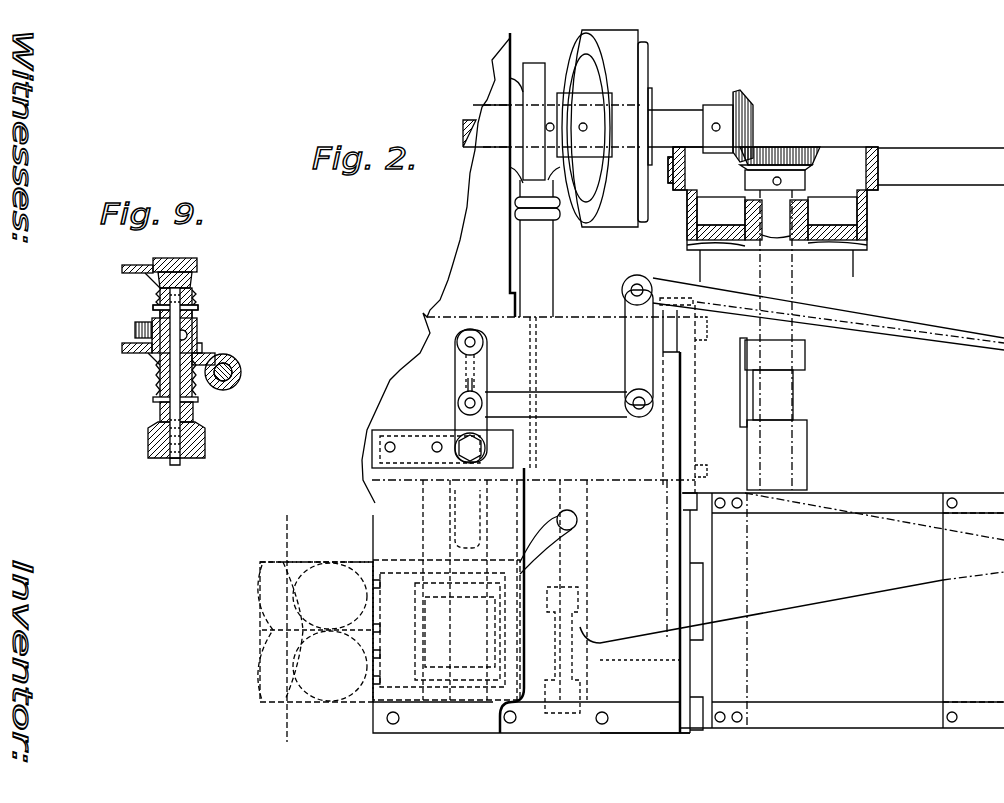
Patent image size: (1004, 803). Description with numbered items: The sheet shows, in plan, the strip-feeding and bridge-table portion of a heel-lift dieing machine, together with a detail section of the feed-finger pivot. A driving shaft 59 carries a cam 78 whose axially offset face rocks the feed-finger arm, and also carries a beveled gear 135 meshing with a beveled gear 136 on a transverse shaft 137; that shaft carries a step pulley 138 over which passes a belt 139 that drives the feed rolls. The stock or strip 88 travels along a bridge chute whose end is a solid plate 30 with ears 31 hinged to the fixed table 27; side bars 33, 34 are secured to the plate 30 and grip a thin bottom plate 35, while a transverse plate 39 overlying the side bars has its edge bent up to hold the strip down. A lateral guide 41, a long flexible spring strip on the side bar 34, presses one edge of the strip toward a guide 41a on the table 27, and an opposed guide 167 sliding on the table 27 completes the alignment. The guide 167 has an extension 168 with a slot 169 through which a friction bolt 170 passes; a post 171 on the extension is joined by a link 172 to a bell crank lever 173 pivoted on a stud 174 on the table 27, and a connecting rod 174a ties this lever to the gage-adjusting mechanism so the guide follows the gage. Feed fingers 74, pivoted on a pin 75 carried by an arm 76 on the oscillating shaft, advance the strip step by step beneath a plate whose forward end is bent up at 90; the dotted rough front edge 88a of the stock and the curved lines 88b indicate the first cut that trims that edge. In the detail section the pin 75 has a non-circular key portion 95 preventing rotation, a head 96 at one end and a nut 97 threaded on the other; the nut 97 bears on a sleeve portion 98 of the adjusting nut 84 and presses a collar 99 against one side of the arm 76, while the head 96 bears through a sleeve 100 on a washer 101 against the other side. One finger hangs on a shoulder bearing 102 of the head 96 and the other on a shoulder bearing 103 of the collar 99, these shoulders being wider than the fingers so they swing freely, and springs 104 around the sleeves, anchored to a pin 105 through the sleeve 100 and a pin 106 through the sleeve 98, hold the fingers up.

In FIG. 2, the cam 78 is at (560, 43).
In FIG. 2, the driving shaft 59 is at (672, 115).
In FIG. 2, the beveled gear 135 is at (742, 92).
In FIG. 2, the beveled gear 136 is at (800, 152).
In FIG. 2, the step pulley 138 is at (862, 226).
In FIG. 2, the belt 139 is at (953, 157).
In FIG. 2, the connecting rod 174a is at (917, 297).
In FIG. 2, the stud 174 is at (640, 418).
In FIG. 2, the bell crank lever 173 is at (550, 400).
In FIG. 2, the post 171 is at (462, 335).
In FIG. 2, the link 172 is at (465, 366).
In FIG. 2, the extension 168 is at (455, 410).
In FIG. 2, the bolt 170 is at (455, 442).
In FIG. 2, the slot 169 is at (442, 456).
In FIG. 2, the transverse shaft 137 is at (790, 400).
In FIG. 2, the solid plate 30 is at (676, 560).
In FIG. 2, the side bar 34 is at (884, 492).
In FIG. 2, the side bar 33 is at (853, 730).
In FIG. 2, the bottom plate 35 is at (827, 610).
In FIG. 2, the transverse plate 39 is at (973, 607).
In FIG. 2, the lateral guide 41 is at (758, 620).
In FIG. 2, the guide 41a is at (648, 718).
In FIG. 2, the ears 31 is at (680, 668).
In FIG. 2, the table 27 is at (600, 683).
In FIG. 2, the feed fingers 74 is at (572, 597).
In FIG. 9, the feed fingers 74 is at (122, 270).
In FIG. 2, the opposed guide 167 is at (530, 542).
In FIG. 2, the bent-up forward end 90 is at (425, 541).
In FIG. 2, the stock or strip 88 is at (316, 636).
In FIG. 2, the rough front edge of stock 88a is at (273, 630).
In FIG. 2, the first cut lines 88b is at (287, 560).
In FIG. 9, the head 96 is at (190, 260).
In FIG. 9, the shoulder bearing 102 is at (196, 285).
In FIG. 9, the sleeve 100 is at (195, 300).
In FIG. 9, the pin 105 is at (200, 306).
In FIG. 9, the washer 101 is at (197, 318).
In FIG. 9, the springs 104 is at (152, 296).
In FIG. 9, the arm 76 is at (135, 330).
In FIG. 9, the key portion 95 is at (197, 336).
In FIG. 9, the shoulder bearing 103 is at (203, 348).
In FIG. 9, the collar 99 is at (122, 348).
In FIG. 9, the nut 84 is at (242, 376).
In FIG. 9, the sleeve portion 98 is at (198, 398).
In FIG. 9, the pin 106 is at (160, 403).
In FIG. 9, the nut 97 is at (150, 447).
In FIG. 9, the pivot pin 75 is at (176, 466).